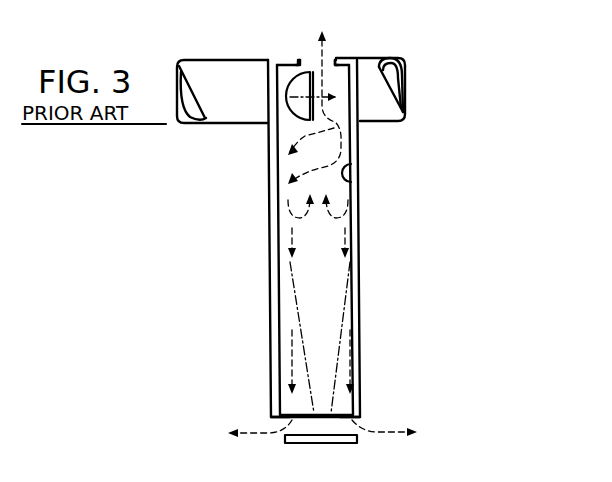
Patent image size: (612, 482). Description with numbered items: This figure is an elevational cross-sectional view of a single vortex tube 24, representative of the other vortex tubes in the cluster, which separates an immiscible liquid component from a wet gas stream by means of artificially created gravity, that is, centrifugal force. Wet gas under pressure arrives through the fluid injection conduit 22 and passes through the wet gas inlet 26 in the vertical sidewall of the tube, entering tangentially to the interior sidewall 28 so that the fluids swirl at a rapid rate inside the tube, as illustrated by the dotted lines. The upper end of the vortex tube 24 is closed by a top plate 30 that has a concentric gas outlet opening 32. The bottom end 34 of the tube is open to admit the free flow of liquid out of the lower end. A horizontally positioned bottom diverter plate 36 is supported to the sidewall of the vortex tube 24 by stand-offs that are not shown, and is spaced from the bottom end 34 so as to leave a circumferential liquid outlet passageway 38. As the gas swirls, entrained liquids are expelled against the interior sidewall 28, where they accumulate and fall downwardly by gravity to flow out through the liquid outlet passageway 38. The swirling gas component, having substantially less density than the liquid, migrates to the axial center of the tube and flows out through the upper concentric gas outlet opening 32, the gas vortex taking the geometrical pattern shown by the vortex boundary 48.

The fluid injection conduit 22 is at (236, 70).
The vortex tube 24 is at (362, 237).
The wet gas inlet 26 is at (296, 115).
The interior sidewall 28 is at (362, 160).
The top plate 30 is at (340, 60).
The gas outlet opening 32 is at (302, 58).
The bottom end 34 is at (278, 419).
The bottom diverter plate 36 is at (368, 435).
The liquid outlet passageway 38 is at (357, 422).
The vortex boundary 48 is at (365, 328).